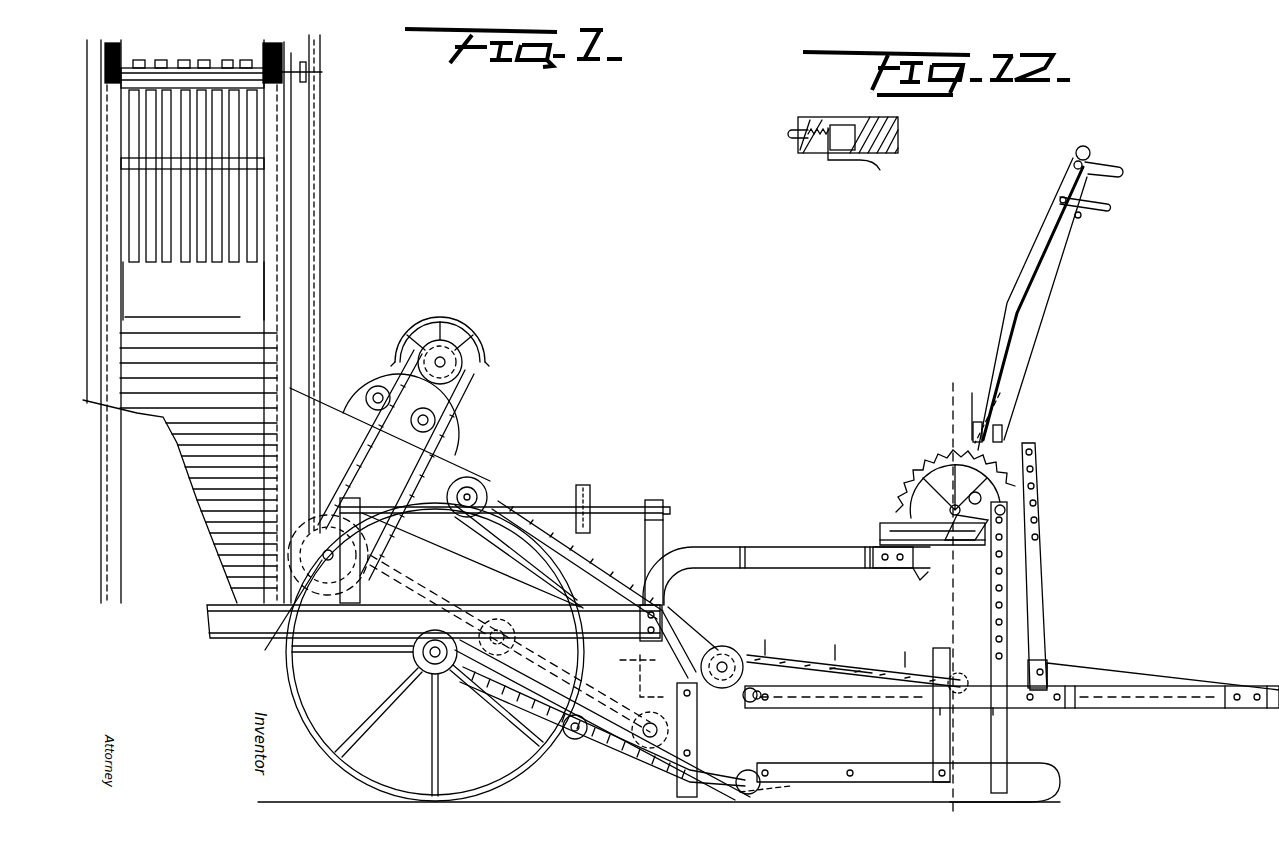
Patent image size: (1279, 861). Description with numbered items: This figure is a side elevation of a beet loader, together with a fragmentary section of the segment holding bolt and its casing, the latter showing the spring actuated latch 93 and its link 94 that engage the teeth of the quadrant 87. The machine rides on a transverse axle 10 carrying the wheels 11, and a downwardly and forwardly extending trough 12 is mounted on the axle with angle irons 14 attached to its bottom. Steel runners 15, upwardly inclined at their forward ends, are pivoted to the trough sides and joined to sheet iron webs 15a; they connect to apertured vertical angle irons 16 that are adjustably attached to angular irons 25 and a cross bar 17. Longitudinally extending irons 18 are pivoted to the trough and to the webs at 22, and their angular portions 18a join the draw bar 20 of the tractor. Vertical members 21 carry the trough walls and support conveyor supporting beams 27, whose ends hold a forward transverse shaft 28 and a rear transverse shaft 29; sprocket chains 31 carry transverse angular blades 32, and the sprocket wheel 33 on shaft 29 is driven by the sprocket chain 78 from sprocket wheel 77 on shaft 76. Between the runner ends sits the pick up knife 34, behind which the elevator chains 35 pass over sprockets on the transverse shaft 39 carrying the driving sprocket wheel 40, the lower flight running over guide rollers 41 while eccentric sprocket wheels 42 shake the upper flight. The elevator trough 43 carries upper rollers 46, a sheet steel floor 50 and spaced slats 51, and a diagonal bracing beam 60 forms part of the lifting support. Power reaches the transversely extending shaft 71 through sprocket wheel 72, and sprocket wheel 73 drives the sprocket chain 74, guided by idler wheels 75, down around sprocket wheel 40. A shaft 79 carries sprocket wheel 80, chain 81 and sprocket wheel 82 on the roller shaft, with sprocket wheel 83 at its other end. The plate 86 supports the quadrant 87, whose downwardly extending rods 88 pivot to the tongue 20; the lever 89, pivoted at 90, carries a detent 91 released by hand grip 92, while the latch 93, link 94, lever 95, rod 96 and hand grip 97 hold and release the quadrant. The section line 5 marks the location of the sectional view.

In FIG. 1, the section line 5 is at (940, 400).
In FIG. 1, the axle 10 is at (435, 652).
In FIG. 1, the wheels 11 is at (365, 778).
In FIG. 1, the trough 12 is at (700, 690).
In FIG. 1, the angle irons 14 is at (545, 690).
In FIG. 1, the steel runners 15 is at (908, 782).
In FIG. 1, the sheet iron webs 15a is at (1012, 716).
In FIG. 1, the vertical angle irons 16 is at (1010, 650).
In FIG. 1, the cross bar 17 is at (1010, 560).
In FIG. 1, the longitudinally extending irons 18 is at (790, 708).
In FIG. 1, the angular portions 18a is at (1130, 690).
In FIG. 1, the draw bar 20 is at (1210, 672).
In FIG. 1, the vertical members 21 is at (629, 676).
In FIG. 1, the pivotal connection 22 is at (755, 705).
In FIG. 1, the angular irons 25 is at (792, 545).
In FIG. 1, the conveyor supporting beams 27 is at (880, 676).
In FIG. 1, the transverse shaft 28 is at (955, 709).
In FIG. 1, the transverse shaft 29 is at (755, 657).
In FIG. 1, the sprocket chains 31 is at (860, 672).
In FIG. 1, the transverse angular blades 32 is at (836, 645).
In FIG. 1, the sprocket wheel 33 is at (750, 702).
In FIG. 1, the pick up knife 34 is at (786, 785).
In FIG. 1, the chains 35 is at (432, 675).
In FIG. 1, the transverse shaft 39 is at (280, 621).
In FIG. 1, the driving sprocket wheel 40 is at (330, 540).
In FIG. 1, the guide rollers 41 is at (573, 739).
In FIG. 1, the eccentric sprocket wheels 42 is at (487, 600).
In FIG. 1, the trough 43 is at (270, 272).
In FIG. 1, the upper rollers 46 is at (125, 48).
In FIG. 1, the sheet steel floor 50 is at (160, 303).
In FIG. 1, the spaced slats 51 is at (245, 133).
In FIG. 1, the diagonal bracing beam 60 is at (434, 623).
In FIG. 1, the transversely extending shaft 71 is at (445, 355).
In FIG. 1, the sprocket wheel 72 is at (417, 475).
In FIG. 1, the sprocket wheel 73 is at (440, 322).
In FIG. 1, the sprocket chain 74 is at (358, 440).
In FIG. 1, the idler wheels 75 is at (380, 385).
In FIG. 1, the shaft 76 is at (500, 512).
In FIG. 1, the sprocket wheel 77 is at (470, 497).
In FIG. 1, the sprocket chain 78 is at (590, 590).
In FIG. 1, the shaft 79 is at (655, 500).
In FIG. 1, the sprocket wheel 80 is at (318, 450).
In FIG. 1, the chain 81 is at (320, 318).
In FIG. 1, the sprocket wheel 82 is at (322, 62).
In FIG. 1, the sprocket wheel 83 is at (590, 495).
In FIG. 1, the plate 86 is at (918, 575).
In FIG. 1, the quadrant 87 is at (928, 468).
In FIG. 12, the quadrant 87 is at (842, 125).
In FIG. 1, the downwardly extending rods 88 is at (1040, 570).
In FIG. 1, the lever 89 is at (1008, 300).
In FIG. 1, the pivot 90 is at (1005, 510).
In FIG. 1, the detent 91 is at (1002, 432).
In FIG. 1, the hand grip 92 is at (1100, 214).
In FIG. 1, the latch 93 is at (882, 530).
In FIG. 12, the latch 93 is at (795, 140).
In FIG. 1, the link 94 is at (923, 530).
In FIG. 12, the link 94 is at (870, 163).
In FIG. 1, the lever 95 is at (979, 408).
In FIG. 1, the rod 96 is at (1020, 355).
In FIG. 1, the hand grip 97 is at (1118, 168).